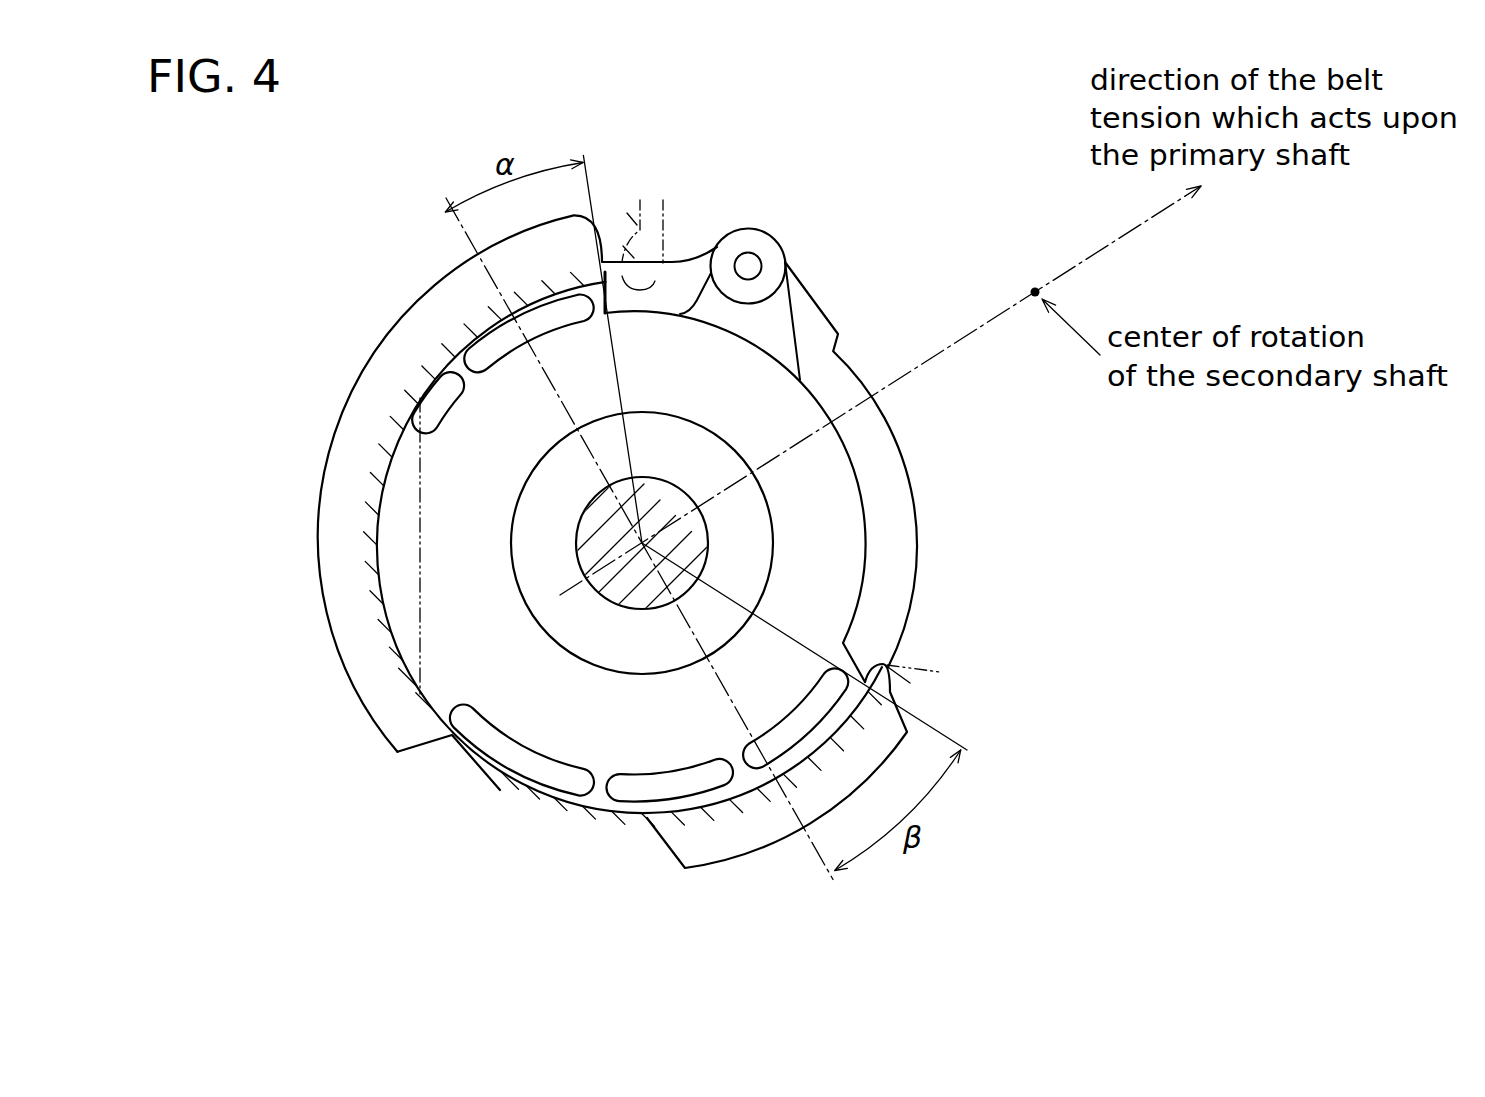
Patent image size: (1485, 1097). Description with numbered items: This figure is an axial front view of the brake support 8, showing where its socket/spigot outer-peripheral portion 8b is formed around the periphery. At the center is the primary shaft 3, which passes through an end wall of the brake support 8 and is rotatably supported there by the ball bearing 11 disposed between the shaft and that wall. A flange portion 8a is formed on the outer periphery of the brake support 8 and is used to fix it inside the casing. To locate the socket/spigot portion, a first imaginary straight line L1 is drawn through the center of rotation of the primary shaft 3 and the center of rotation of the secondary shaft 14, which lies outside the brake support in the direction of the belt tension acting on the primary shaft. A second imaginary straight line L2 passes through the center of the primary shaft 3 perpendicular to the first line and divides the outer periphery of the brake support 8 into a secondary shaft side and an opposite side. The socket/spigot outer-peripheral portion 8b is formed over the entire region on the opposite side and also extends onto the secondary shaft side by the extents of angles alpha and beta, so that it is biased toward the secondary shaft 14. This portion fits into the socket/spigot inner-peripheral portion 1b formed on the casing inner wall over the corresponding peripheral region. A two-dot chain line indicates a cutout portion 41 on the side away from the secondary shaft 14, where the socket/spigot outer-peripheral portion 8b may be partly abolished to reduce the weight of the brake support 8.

The socket/spigot inner-peripheral portion 1b is at (648, 243).
The primary shaft 3 is at (692, 548).
The brake support 8 is at (780, 197).
The flange portion 8a is at (337, 453).
The socket/spigot outer-peripheral portion 8b is at (437, 352).
The ball bearing 11 is at (740, 512).
The secondary shaft 14 is at (1032, 290).
The cutout portion 41 is at (398, 533).
The first imaginary straight line L1 is at (932, 360).
The second imaginary straight line L2 is at (460, 240).